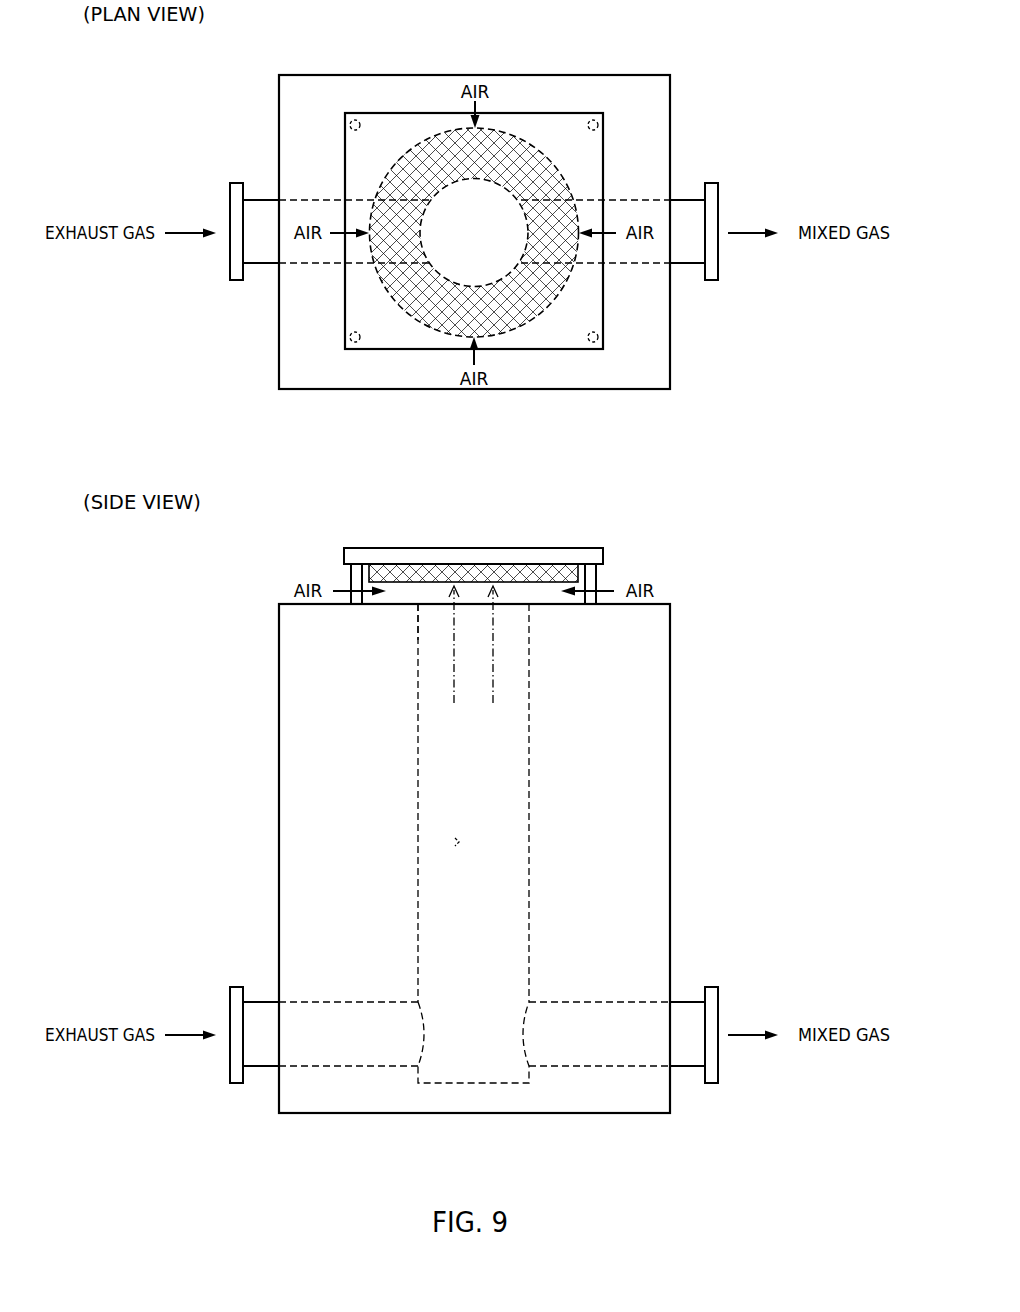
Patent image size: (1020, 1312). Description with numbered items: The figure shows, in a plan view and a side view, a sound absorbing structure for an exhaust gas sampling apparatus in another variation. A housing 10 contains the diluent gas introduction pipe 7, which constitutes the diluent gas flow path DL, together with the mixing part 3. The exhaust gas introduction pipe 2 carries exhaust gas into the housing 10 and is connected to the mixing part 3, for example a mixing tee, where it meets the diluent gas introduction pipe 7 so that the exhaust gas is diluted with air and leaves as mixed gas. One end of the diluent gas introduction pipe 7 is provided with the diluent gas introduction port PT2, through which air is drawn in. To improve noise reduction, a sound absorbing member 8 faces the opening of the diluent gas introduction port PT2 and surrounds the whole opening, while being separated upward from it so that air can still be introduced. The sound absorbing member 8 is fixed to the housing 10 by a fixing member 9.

The housing 10 is at (279, 128).
The fixing member 9 is at (393, 113).
The exhaust gas introduction pipe 2 is at (326, 198).
The diluent gas introduction pipe 7 is at (445, 284).
The sound absorbing member 8 is at (515, 328).
The mixing part 3 is at (475, 1085).
The diluent gas introduction port PT2 is at (418, 613).
The diluent gas flow path DL is at (458, 845).